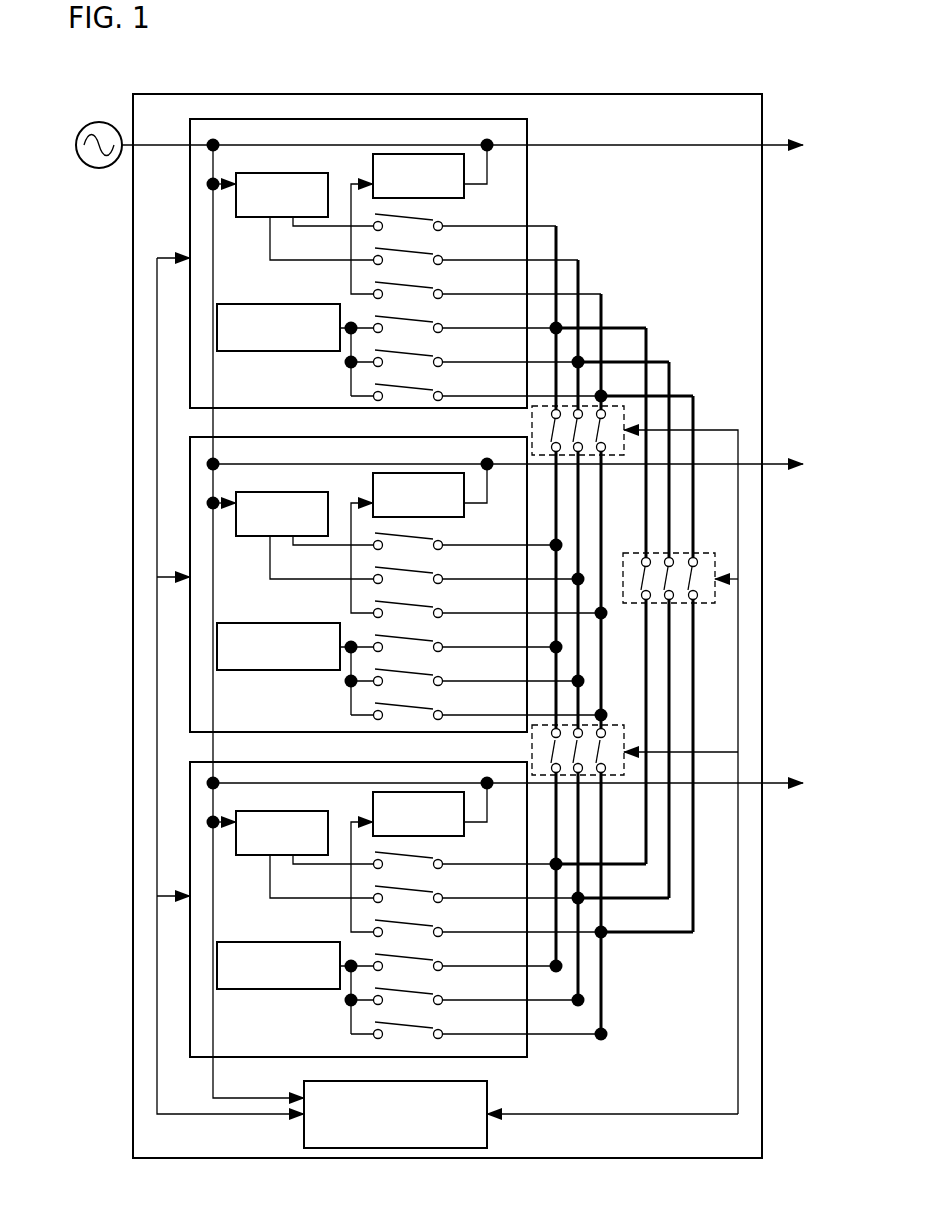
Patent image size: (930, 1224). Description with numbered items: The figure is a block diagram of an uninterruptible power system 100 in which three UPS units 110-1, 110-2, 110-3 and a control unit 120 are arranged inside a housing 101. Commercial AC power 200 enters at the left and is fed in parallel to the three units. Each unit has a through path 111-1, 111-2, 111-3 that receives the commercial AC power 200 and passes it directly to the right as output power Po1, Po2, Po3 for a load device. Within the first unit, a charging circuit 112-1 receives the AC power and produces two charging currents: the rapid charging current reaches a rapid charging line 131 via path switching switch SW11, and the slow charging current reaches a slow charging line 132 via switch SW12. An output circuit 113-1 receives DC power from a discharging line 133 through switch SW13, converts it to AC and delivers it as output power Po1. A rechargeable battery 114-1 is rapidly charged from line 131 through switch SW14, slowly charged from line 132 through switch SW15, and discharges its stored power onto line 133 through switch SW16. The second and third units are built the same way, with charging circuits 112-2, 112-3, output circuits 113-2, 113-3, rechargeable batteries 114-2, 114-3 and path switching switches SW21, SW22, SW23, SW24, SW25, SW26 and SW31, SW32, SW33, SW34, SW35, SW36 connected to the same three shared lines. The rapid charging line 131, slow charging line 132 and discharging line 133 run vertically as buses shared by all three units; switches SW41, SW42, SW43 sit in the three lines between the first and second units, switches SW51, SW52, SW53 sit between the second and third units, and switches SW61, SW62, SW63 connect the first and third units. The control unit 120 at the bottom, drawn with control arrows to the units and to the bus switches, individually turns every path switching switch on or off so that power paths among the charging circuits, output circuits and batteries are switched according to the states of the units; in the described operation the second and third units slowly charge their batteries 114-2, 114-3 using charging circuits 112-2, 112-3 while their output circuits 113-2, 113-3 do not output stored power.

The uninterruptible power system 100 is at (304, 85).
The housing 101 is at (133, 320).
The commercial AC power 200 is at (100, 122).
The UPS unit 110-1 is at (358, 252).
The UPS unit 110-2 is at (358, 573).
The UPS unit 110-3 is at (358, 897).
The through path 111-1 is at (505, 137).
The through path 111-2 is at (505, 456).
The through path 111-3 is at (505, 775).
The charging circuit 112-1 is at (286, 182).
The charging circuit 112-2 is at (286, 501).
The charging circuit 112-3 is at (286, 820).
The output circuit 113-1 is at (479, 173).
The output circuit 113-2 is at (419, 479).
The output circuit 113-3 is at (419, 798).
The rechargeable battery 114-1 is at (279, 314).
The rechargeable battery 114-2 is at (279, 633).
The rechargeable battery 114-3 is at (279, 952).
The control unit 120 is at (489, 1090).
The rapid charging line 131 is at (559, 241).
The slow charging line 132 is at (581, 276).
The discharging line 133 is at (604, 309).
The path switching switch SW11 is at (441, 216).
The path switching switch SW12 is at (441, 250).
The path switching switch SW13 is at (441, 284).
The path switching switch SW14 is at (441, 318).
The path switching switch SW15 is at (441, 352).
The path switching switch SW16 is at (441, 386).
The path switching switch SW21 is at (441, 535).
The path switching switch SW22 is at (441, 569).
The path switching switch SW23 is at (441, 603).
The path switching switch SW24 is at (441, 637).
The path switching switch SW25 is at (441, 671).
The path switching switch SW26 is at (441, 705).
The path switching switch SW31 is at (441, 854).
The path switching switch SW32 is at (441, 888).
The path switching switch SW33 is at (441, 922).
The path switching switch SW34 is at (441, 956).
The path switching switch SW35 is at (441, 990).
The path switching switch SW36 is at (441, 1024).
The path switching switch SW41 is at (549, 436).
The path switching switch SW42 is at (582, 451).
The path switching switch SW43 is at (604, 428).
The path switching switch SW51 is at (548, 753).
The path switching switch SW52 is at (582, 772).
The path switching switch SW53 is at (604, 750).
The path switching switch SW61 is at (640, 581).
The path switching switch SW62 is at (673, 600).
The path switching switch SW63 is at (698, 577).
The output power Po1 is at (789, 126).
The output power Po2 is at (789, 445).
The output power Po3 is at (789, 764).